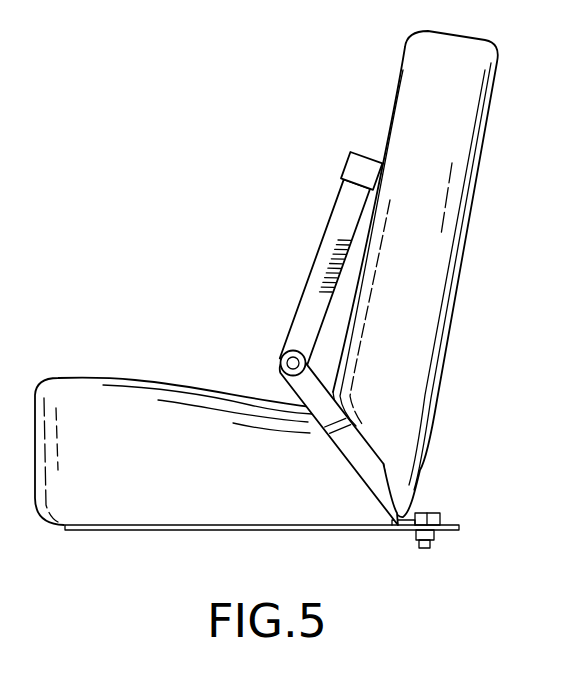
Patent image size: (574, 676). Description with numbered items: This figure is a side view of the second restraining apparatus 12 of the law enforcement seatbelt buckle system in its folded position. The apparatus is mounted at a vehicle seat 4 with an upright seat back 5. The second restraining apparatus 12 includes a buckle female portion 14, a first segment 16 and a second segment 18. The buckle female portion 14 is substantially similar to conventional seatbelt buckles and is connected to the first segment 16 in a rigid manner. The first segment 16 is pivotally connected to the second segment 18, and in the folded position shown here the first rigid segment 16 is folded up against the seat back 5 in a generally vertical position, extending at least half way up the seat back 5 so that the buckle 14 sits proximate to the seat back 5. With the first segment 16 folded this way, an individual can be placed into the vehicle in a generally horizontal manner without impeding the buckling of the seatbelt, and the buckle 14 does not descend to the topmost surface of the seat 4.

The seat 4 is at (162, 493).
The seat back 5 is at (450, 127).
The second restraining apparatus 12 is at (224, 333).
The buckle female portion 14 is at (355, 159).
The first segment 16 is at (320, 256).
The second segment 18 is at (353, 425).